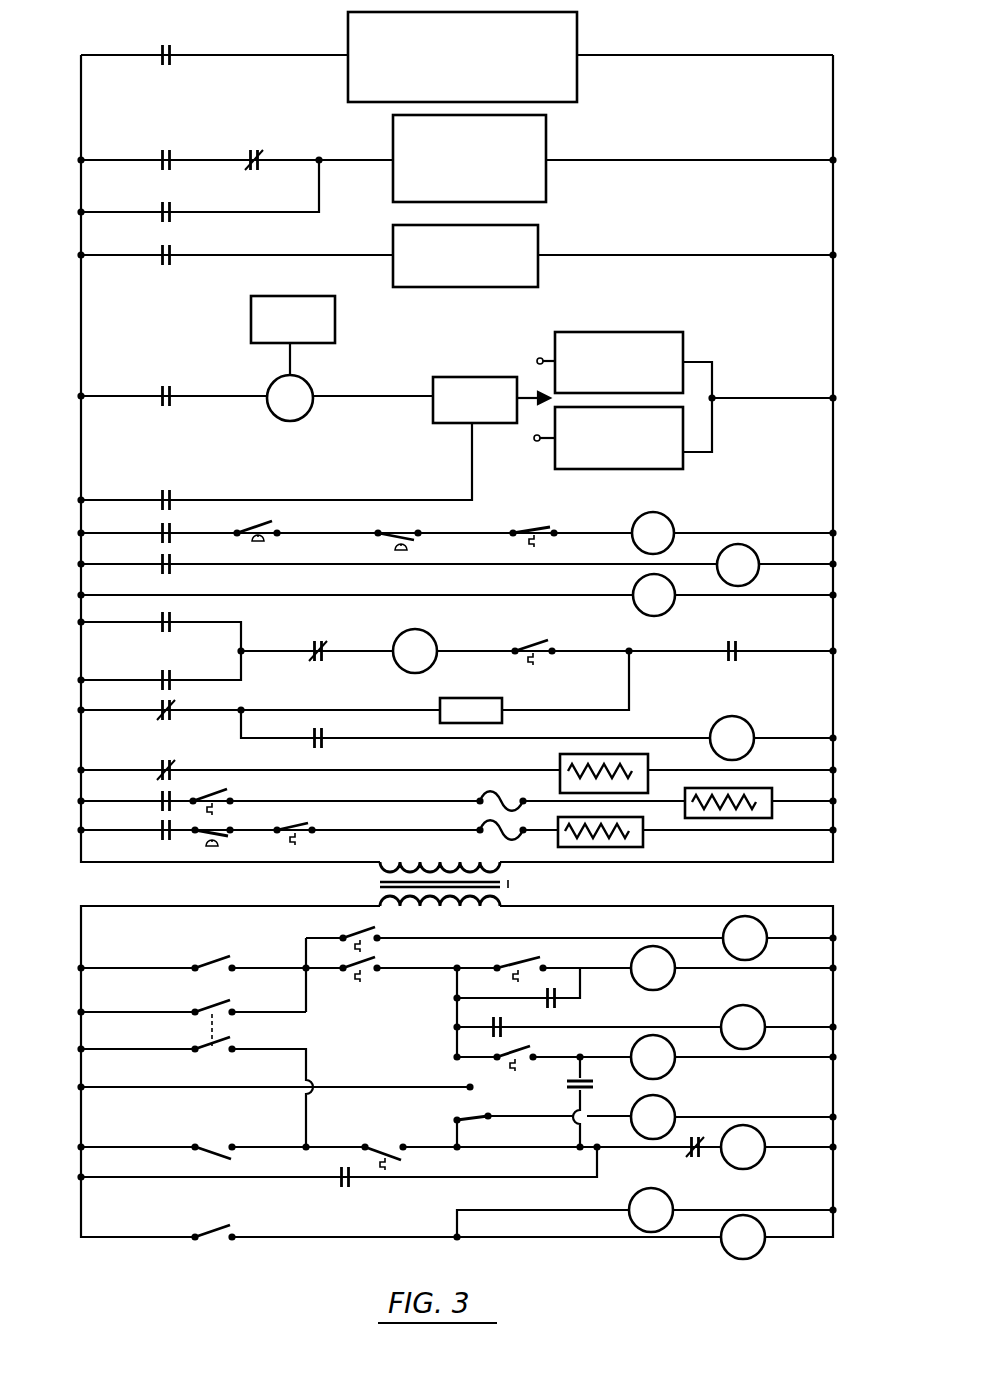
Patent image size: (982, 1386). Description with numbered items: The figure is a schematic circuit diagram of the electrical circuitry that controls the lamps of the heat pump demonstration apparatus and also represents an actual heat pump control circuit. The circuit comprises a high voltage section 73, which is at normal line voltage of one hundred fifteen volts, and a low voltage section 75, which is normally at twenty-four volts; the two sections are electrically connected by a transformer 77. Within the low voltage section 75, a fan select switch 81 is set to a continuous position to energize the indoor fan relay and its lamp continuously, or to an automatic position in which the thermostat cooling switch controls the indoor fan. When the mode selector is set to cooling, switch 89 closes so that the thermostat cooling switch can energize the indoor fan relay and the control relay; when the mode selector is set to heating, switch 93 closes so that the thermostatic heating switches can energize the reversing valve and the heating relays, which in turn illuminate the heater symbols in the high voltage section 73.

The high voltage section 73 is at (72, 724).
The low voltage section 75 is at (72, 1061).
The transformer 77 is at (375, 883).
The fan select switch 81 is at (469, 1117).
The switch 89 is at (206, 1152).
The switch 93 is at (229, 956).